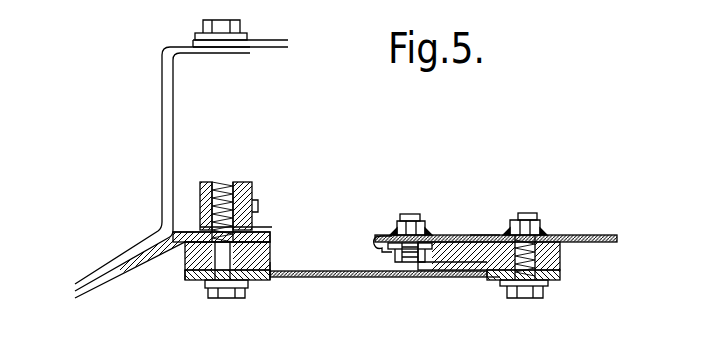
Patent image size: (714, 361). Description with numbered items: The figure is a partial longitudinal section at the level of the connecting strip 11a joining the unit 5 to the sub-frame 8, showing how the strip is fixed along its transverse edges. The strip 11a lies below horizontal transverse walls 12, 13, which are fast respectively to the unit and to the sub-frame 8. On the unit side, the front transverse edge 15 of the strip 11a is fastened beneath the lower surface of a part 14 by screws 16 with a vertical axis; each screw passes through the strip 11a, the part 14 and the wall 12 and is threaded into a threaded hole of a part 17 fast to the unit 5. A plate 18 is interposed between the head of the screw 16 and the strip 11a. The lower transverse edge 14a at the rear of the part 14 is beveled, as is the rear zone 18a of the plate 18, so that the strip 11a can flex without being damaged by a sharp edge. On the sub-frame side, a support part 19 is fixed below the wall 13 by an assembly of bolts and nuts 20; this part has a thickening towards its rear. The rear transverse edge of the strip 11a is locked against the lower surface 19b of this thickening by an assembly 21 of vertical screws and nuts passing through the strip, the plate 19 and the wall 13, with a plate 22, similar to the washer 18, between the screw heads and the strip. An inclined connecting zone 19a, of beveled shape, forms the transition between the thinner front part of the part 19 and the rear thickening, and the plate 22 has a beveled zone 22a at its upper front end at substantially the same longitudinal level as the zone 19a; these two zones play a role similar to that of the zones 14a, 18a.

The unit 5 is at (137, 163).
The sub-frame 8 is at (615, 233).
The connecting strip 11a is at (344, 286).
The horizontal transverse wall 12 is at (180, 244).
The horizontal transverse wall 13 is at (490, 226).
The part 14 is at (188, 272).
The lower transverse edge 14a is at (272, 267).
The front transverse edge 15 is at (247, 281).
The screw 16 is at (224, 290).
The part 17 is at (243, 185).
The plate 18 is at (200, 281).
The rear zone 18a is at (260, 281).
The support part 19 is at (560, 250).
The inclined connecting zone 19a is at (470, 271).
The lower surface 19b is at (552, 272).
The assembly of bolts and nuts 20 is at (433, 215).
The assembly of vertical screws and nuts 21 is at (542, 212).
The plate 22 is at (535, 287).
The beveled zone 22a is at (489, 277).